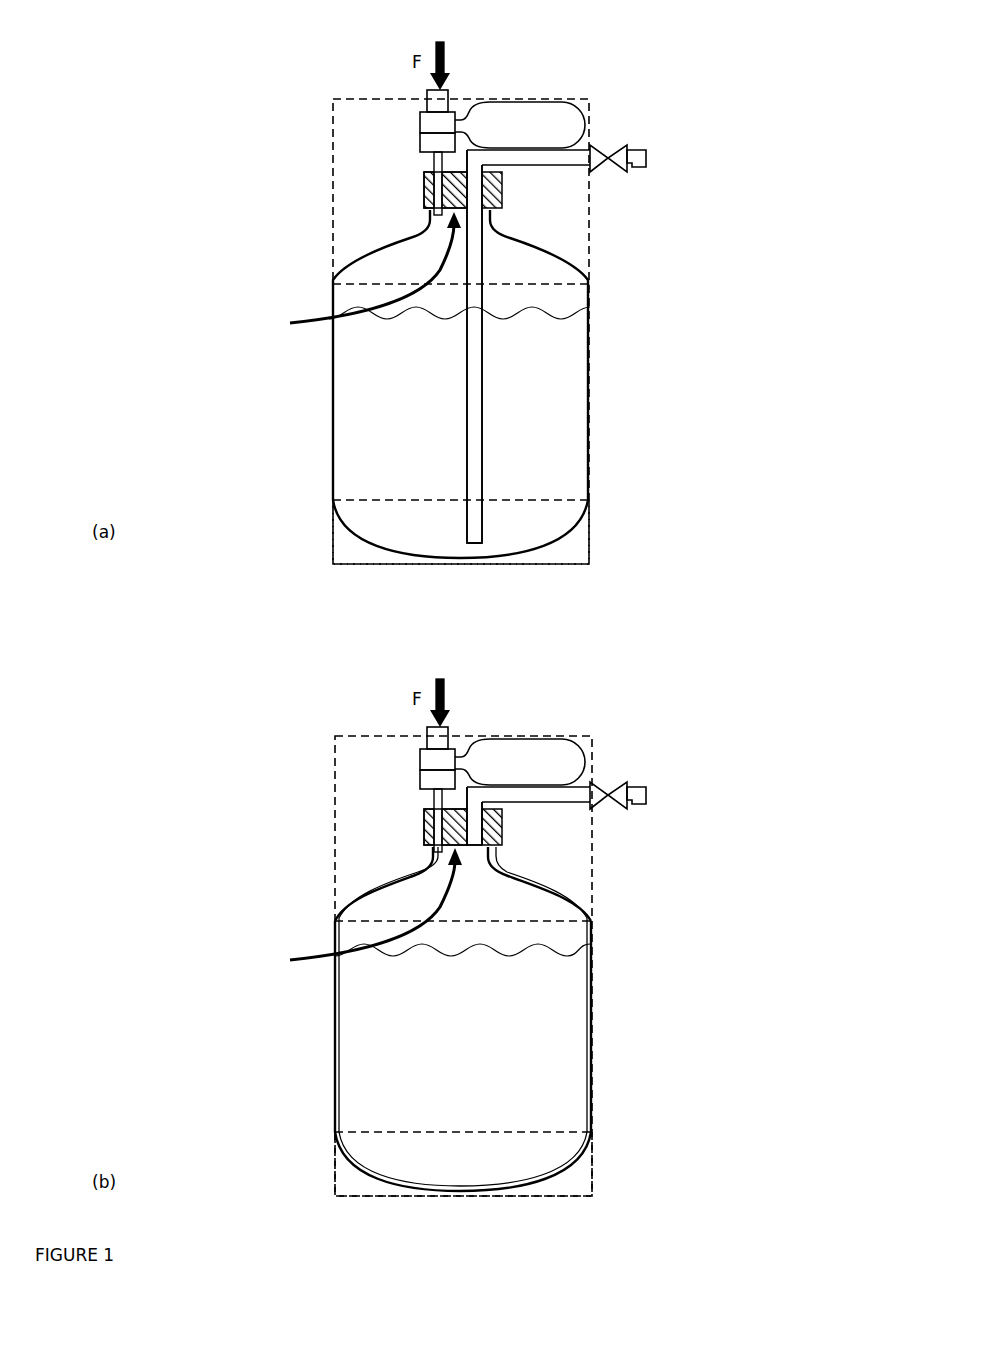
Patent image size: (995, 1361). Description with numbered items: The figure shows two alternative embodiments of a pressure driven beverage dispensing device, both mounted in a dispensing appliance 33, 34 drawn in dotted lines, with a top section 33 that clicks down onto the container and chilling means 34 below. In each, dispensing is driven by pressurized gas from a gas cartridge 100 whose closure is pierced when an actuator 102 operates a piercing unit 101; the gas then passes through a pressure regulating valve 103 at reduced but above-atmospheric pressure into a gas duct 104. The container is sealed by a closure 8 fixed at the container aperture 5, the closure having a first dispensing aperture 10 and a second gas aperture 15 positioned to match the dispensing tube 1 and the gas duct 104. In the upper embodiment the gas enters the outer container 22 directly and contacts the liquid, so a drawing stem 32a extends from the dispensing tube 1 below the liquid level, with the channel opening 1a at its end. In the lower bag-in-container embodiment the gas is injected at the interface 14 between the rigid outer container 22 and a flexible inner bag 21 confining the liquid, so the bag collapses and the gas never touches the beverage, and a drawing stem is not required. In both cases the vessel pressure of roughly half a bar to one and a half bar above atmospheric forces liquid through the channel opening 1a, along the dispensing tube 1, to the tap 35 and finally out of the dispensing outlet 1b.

The dispensing tube 1 is at (545, 168).
The channel opening 1a is at (478, 543).
The dispensing outlet 1b is at (638, 168).
The aperture of the container 5 is at (366, 590).
The closure 8 is at (427, 188).
The first dispensing aperture 10 is at (472, 170).
The interface between outer container and inner bag 14 is at (385, 882).
The second gas aperture 15 is at (424, 194).
The inner container or bag 21 is at (334, 912).
The outer container 22 is at (363, 252).
The drawing stem 32a is at (482, 430).
The top section of the appliance 33 is at (590, 100).
The chilling means 34 is at (590, 537).
The tap 35 is at (605, 152).
The gas cartridge 100 is at (502, 102).
The piercing unit 101 is at (420, 122).
The actuator 102 is at (448, 90).
The pressure regulating valve 103 is at (420, 143).
The gas duct 104 is at (437, 167).